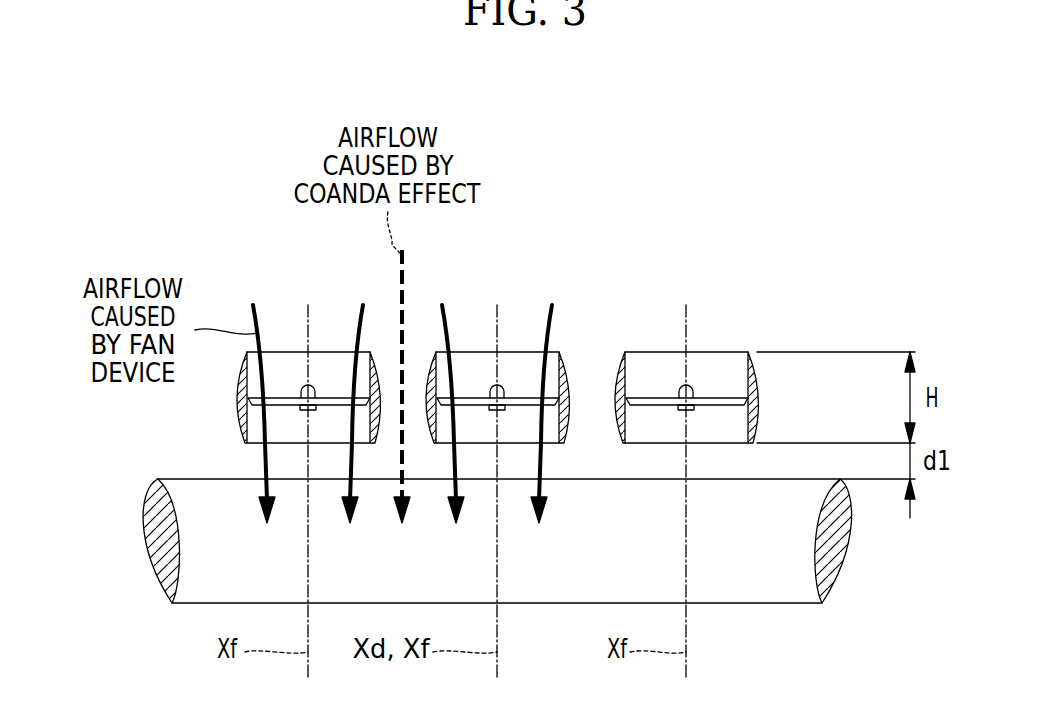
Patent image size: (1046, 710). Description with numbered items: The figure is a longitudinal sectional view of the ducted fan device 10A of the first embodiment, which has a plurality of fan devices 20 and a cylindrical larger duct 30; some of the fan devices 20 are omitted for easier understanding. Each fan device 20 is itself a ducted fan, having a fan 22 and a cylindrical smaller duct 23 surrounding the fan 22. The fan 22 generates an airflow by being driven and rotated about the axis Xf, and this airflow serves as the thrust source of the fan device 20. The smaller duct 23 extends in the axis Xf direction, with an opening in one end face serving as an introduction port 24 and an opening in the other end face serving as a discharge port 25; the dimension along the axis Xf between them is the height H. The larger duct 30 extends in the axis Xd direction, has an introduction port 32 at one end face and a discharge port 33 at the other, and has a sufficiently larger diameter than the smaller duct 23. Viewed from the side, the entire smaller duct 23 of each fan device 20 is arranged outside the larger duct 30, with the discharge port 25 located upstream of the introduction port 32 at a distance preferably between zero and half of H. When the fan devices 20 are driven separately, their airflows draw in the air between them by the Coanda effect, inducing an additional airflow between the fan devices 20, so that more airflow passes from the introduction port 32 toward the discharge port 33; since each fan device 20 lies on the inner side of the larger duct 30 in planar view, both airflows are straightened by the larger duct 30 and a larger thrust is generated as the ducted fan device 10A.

The ducted fan device 10A is at (522, 218).
The fan device 20 is at (521, 462).
The fan 22 is at (687, 466).
The smaller duct 23 is at (710, 397).
The introduction port 24 is at (686, 299).
The discharge port 25 is at (686, 495).
The larger duct 30 is at (143, 543).
The introduction port 32 is at (597, 458).
The discharge port 33 is at (558, 624).